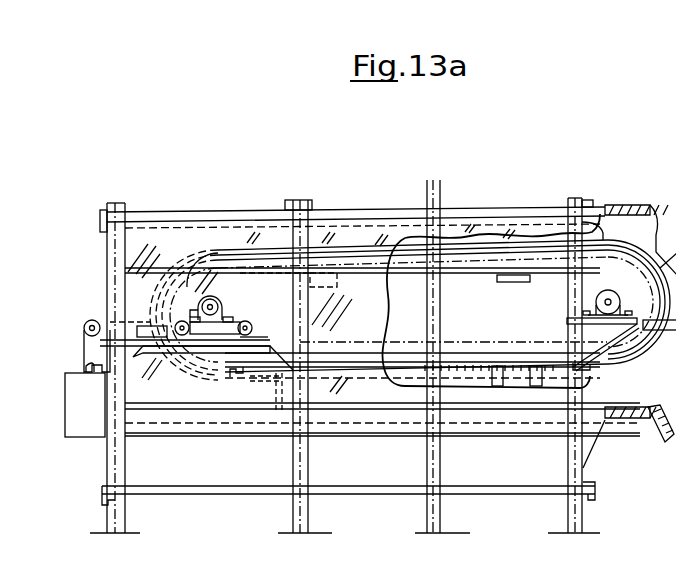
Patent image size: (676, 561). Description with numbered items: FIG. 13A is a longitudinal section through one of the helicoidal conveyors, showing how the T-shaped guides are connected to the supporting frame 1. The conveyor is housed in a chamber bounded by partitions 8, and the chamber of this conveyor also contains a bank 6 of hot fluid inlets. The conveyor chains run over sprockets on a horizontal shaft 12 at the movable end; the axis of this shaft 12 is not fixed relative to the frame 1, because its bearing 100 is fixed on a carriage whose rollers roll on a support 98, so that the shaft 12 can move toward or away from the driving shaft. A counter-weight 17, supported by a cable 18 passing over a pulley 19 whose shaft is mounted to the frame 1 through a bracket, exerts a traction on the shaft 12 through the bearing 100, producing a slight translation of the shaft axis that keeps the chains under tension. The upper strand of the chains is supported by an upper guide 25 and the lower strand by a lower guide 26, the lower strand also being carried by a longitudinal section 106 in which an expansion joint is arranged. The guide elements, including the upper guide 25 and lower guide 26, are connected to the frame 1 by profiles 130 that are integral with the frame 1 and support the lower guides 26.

The frame 1 is at (132, 474).
The bank of hot fluid inlets 6 is at (412, 380).
The partitions 8 is at (621, 336).
The horizontal shaft 12 is at (236, 316).
The counter-weight 17 is at (90, 420).
The cable 18 is at (83, 354).
The pulley 19 is at (90, 321).
The upper guide 25 is at (472, 246).
The lower guide 26 is at (488, 366).
The support 98 is at (264, 332).
The bearing 100 is at (247, 319).
The longitudinal section 106 is at (409, 270).
The profiles 130 is at (232, 373).